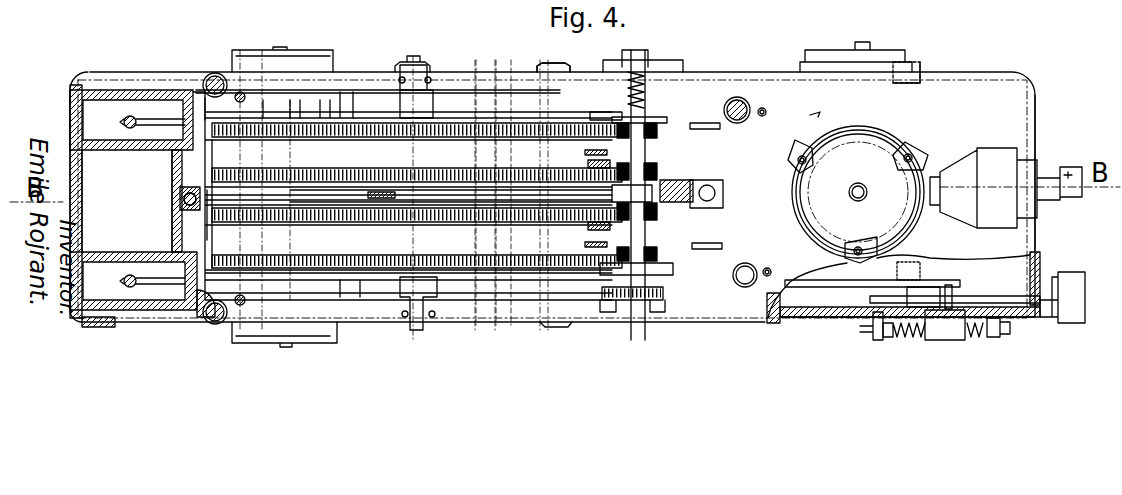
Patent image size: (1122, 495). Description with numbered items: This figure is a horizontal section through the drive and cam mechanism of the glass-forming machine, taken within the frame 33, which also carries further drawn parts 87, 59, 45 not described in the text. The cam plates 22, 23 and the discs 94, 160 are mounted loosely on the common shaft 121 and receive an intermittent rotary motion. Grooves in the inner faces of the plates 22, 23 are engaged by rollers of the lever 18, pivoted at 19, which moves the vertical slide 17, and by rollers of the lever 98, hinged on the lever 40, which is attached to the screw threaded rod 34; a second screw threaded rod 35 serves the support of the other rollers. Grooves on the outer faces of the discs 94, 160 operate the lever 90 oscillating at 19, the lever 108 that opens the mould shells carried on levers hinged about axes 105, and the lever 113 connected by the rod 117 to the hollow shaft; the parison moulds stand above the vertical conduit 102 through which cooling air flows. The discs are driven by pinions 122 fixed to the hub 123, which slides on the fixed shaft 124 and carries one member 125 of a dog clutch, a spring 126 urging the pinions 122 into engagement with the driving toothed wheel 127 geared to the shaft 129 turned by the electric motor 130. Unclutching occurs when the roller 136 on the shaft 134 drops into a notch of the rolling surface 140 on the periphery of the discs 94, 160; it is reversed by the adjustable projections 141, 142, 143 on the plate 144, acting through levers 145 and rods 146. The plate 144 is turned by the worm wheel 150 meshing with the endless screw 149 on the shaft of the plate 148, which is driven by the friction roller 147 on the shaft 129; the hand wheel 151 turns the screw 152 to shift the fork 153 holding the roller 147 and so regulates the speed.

The axes 105 is at (172, 5).
The rod 117 is at (240, 56).
The lever 113 is at (264, 52).
The lever 108 is at (157, 119).
The screw 87 is at (733, 274).
The common shaft 121 is at (414, 341).
The lever 90 is at (496, 90).
The rolling surface 140 is at (476, 325).
The pivot 19 is at (552, 63).
The second roller 136 is at (598, 116).
The shaft 124 is at (640, 50).
The spring 126 is at (646, 80).
The levers 145 is at (620, 117).
The rods 146 is at (704, 123).
The projection 142 is at (800, 140).
The plate 144 is at (866, 128).
The projection 141 is at (915, 150).
The frame 33 is at (78, 229).
The disc 160 is at (226, 137).
The plate 23 is at (258, 168).
The lever 98 is at (378, 192).
The stop 59 is at (587, 194).
The stop 45 is at (605, 160).
The vertical slide 17 is at (649, 167).
The hub 123 is at (650, 150).
The endless screw 149 is at (858, 192).
The electric motor 130 is at (1025, 188).
The vertical conduit 102 is at (127, 201).
The screw threaded rod 34 is at (173, 199).
The screw threaded rod 35 is at (703, 194).
The worm wheel 150 is at (856, 201).
The pinions 122 is at (660, 215).
The lever 40 is at (210, 222).
The plate 22 is at (260, 222).
The disc 94 is at (240, 240).
The lever 18 is at (458, 205).
The shaft 134 is at (650, 235).
The projection 143 is at (899, 277).
The plate 148 is at (872, 279).
The friction roller 147 is at (948, 287).
The shaft 129 is at (1000, 296).
The dog clutch member 125 is at (672, 282).
The driving toothed wheel 127 is at (660, 300).
The hand wheel 151 is at (878, 341).
The screw 152 is at (908, 338).
The fork 153 is at (945, 341).